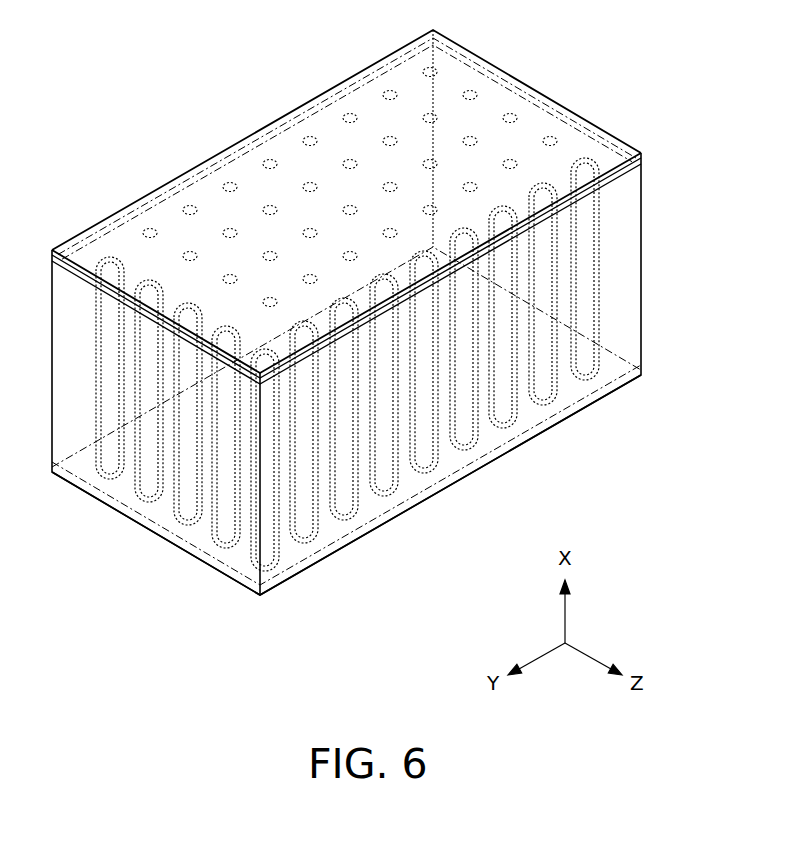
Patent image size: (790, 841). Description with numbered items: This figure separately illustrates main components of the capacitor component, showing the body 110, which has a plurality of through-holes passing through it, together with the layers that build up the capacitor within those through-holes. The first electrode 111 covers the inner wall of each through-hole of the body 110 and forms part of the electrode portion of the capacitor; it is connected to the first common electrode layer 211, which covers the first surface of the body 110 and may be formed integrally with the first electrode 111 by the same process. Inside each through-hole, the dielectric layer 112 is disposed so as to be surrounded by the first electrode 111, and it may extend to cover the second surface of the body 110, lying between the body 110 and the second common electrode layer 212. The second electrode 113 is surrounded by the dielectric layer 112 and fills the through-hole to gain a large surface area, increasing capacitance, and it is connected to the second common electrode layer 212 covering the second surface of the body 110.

The body 110 is at (245, 163).
The first electrode 111 is at (82, 222).
The dielectric layer 112 is at (118, 253).
The second electrode 113 is at (110, 253).
The first common electrode layer 211 is at (402, 512).
The second common electrode layer 212 is at (578, 216).